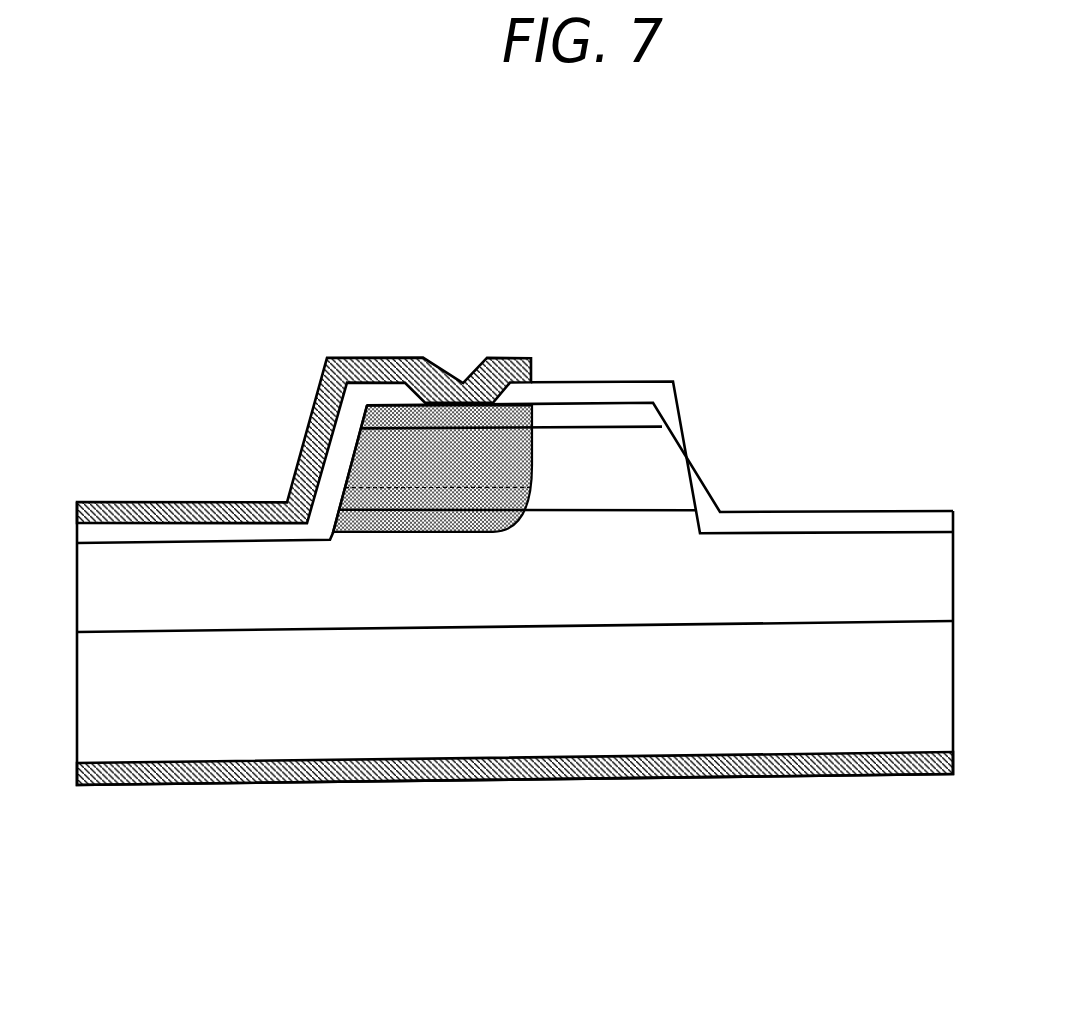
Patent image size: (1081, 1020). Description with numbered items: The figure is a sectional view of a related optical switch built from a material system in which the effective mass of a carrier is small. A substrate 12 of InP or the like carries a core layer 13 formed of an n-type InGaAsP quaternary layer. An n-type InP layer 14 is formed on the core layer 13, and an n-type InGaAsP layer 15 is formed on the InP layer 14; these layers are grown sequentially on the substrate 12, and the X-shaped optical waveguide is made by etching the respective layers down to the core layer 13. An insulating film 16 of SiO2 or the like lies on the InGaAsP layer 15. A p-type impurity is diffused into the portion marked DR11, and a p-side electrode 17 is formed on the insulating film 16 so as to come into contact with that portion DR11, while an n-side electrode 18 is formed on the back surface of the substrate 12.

The substrate 12 is at (955, 668).
The core layer 13 is at (955, 572).
The n-type InP layer 14 is at (652, 468).
The n-type InGaAsP layer 15 is at (638, 410).
The insulating film 16 is at (585, 382).
The p-side electrode 17 is at (185, 500).
The n-side electrode 18 is at (600, 778).
The p-type impurity diffused portion DR11 is at (468, 470).